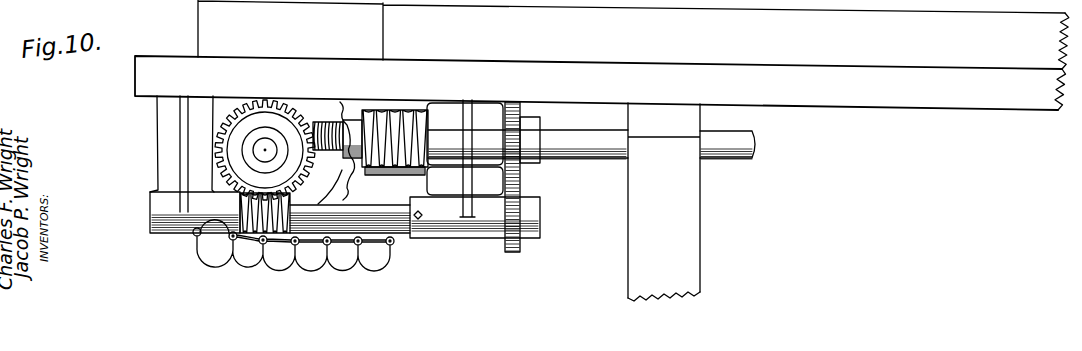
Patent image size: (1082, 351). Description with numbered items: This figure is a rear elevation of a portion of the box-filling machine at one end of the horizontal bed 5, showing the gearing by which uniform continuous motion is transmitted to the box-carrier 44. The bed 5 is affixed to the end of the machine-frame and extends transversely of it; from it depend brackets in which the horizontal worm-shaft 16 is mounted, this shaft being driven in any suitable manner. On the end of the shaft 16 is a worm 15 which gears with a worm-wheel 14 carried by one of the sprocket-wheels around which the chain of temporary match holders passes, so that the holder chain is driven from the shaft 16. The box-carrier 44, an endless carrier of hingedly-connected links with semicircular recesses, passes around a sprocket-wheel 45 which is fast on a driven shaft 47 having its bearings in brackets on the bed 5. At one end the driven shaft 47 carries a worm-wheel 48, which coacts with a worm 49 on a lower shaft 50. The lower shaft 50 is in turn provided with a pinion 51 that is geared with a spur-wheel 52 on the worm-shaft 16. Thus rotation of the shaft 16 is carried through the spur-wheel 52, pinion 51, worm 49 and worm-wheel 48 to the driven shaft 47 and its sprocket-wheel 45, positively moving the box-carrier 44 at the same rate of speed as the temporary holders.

The horizontal bed 5 is at (600, 83).
The worm-wheel 14 is at (342, 118).
The worm 15 is at (390, 112).
The horizontal shaft 16 is at (733, 160).
The box-carrier 44 is at (343, 250).
The sprocket-wheel 45 is at (352, 190).
The driven shaft 47 is at (258, 148).
The worm-wheel 48 is at (220, 158).
The worm 49 is at (256, 236).
The lower shaft 50 is at (398, 228).
The pinion 51 is at (518, 248).
The spur-wheel 52 is at (522, 176).